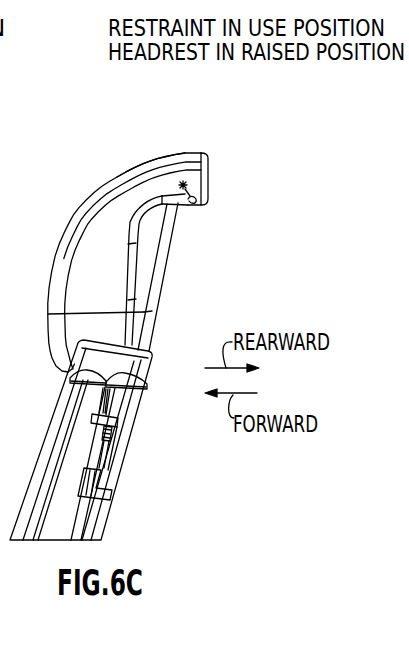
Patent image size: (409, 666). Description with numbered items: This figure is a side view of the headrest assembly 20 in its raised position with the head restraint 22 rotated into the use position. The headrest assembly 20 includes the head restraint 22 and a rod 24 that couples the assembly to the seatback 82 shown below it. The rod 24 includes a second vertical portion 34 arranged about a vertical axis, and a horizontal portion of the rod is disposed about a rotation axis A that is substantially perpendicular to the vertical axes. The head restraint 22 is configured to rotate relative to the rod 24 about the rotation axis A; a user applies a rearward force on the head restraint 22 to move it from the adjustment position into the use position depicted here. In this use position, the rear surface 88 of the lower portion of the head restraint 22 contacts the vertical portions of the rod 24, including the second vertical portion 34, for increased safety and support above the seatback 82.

The headrest assembly 20 is at (88, 190).
The head restraint 22 is at (107, 172).
The rotation axis A is at (205, 203).
The rod 24 is at (177, 249).
The second vertical portion 34 is at (162, 277).
The rear surface 88 is at (150, 318).
The seatback 82 is at (140, 450).